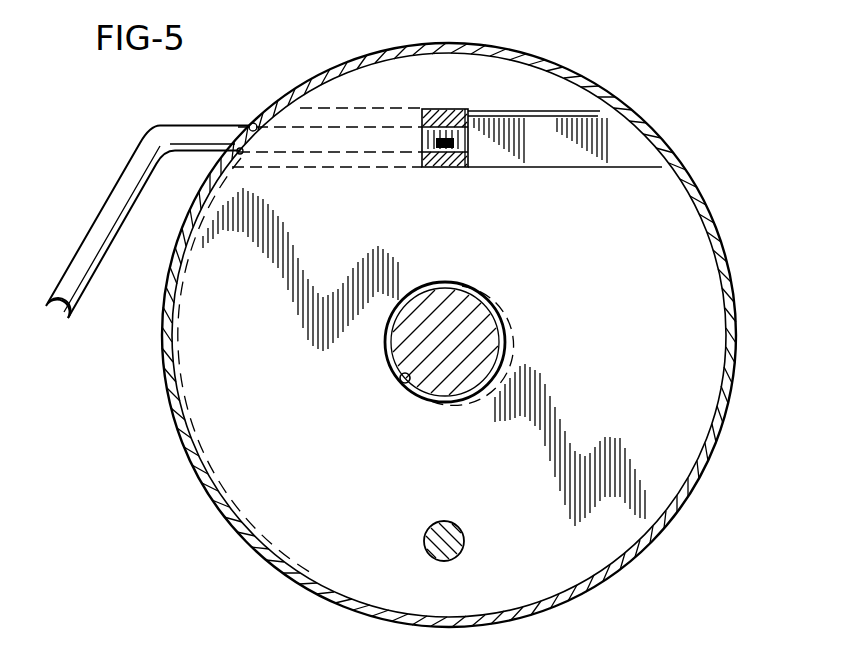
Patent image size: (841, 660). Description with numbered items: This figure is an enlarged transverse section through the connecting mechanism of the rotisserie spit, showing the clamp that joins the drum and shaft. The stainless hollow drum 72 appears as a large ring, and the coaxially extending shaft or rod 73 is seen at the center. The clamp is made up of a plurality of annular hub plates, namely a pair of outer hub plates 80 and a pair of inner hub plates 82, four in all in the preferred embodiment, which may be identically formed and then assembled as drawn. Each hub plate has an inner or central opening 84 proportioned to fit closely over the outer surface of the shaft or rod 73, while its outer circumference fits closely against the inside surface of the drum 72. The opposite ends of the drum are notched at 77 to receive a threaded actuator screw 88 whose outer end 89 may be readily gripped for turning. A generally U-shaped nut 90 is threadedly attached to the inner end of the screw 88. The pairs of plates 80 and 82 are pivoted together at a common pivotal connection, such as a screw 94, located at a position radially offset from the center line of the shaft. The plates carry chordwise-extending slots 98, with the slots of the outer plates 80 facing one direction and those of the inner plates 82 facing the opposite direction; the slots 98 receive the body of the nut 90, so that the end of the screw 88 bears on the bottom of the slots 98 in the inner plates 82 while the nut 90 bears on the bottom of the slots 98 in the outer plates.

The hollow drum 72 is at (206, 496).
The shaft or rod 73 is at (497, 323).
The notch 77 is at (257, 125).
The outer hub plates 80 is at (641, 349).
The inner hub plates 82 is at (625, 137).
The central opening 84 is at (402, 384).
The threaded actuator screw 88 is at (205, 127).
The outer end of screw 89 is at (74, 318).
The U-shaped nut 90 is at (445, 167).
The screw 94 is at (456, 536).
The chordwise-extending slots 98 is at (546, 165).